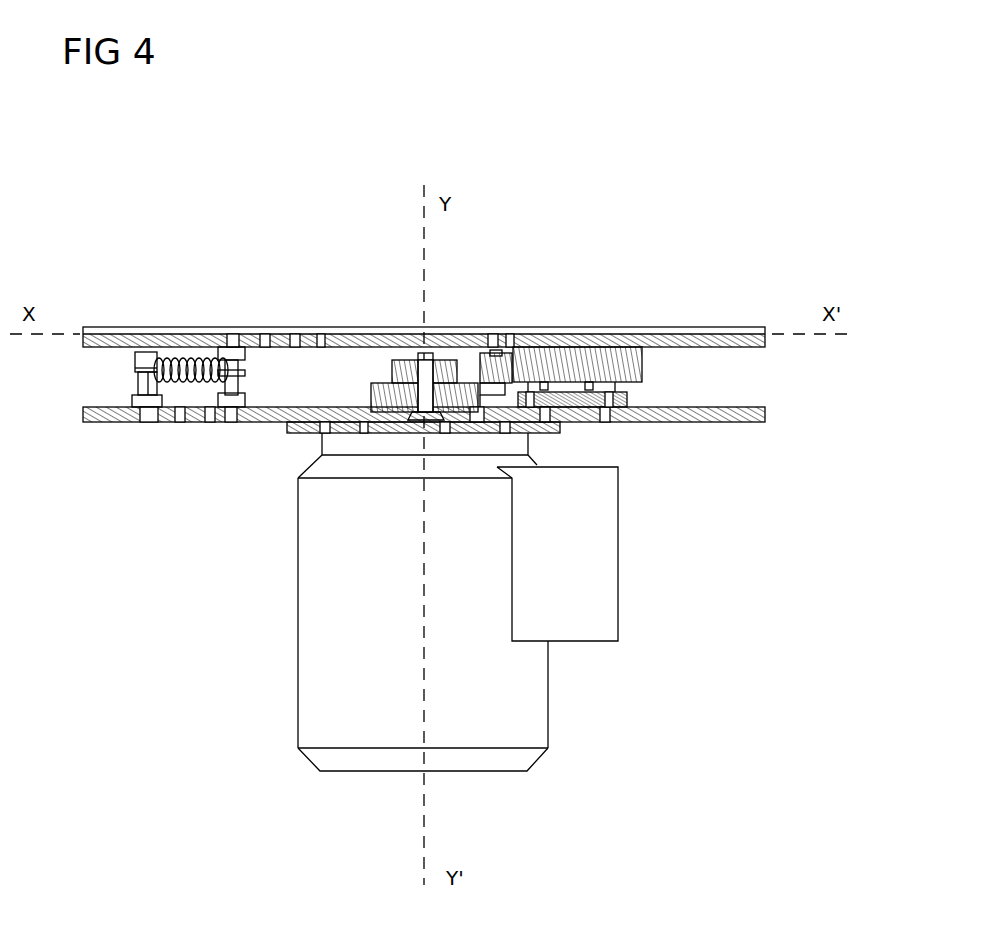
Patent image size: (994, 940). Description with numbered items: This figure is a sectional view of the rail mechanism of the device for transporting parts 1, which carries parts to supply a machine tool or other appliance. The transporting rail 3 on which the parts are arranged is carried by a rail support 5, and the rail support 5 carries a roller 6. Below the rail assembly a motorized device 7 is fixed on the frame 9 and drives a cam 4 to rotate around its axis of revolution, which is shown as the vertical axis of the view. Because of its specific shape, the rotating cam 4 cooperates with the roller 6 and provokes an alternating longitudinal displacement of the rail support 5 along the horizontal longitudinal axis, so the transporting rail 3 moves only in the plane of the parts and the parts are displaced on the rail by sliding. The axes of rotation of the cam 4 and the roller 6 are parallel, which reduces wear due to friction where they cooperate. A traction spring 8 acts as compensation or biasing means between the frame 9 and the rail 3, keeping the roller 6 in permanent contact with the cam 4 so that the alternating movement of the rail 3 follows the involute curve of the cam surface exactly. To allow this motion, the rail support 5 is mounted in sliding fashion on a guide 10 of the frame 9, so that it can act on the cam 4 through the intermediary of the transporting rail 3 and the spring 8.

The device for transporting parts 1 is at (556, 141).
The transporting rail 3 is at (99, 326).
The cam 4 is at (358, 395).
The rail support 5 is at (614, 374).
The roller 6 is at (490, 434).
The motorized device 7 is at (288, 666).
The traction spring 8 is at (188, 400).
The frame 9 is at (108, 435).
The guide 10 is at (640, 398).